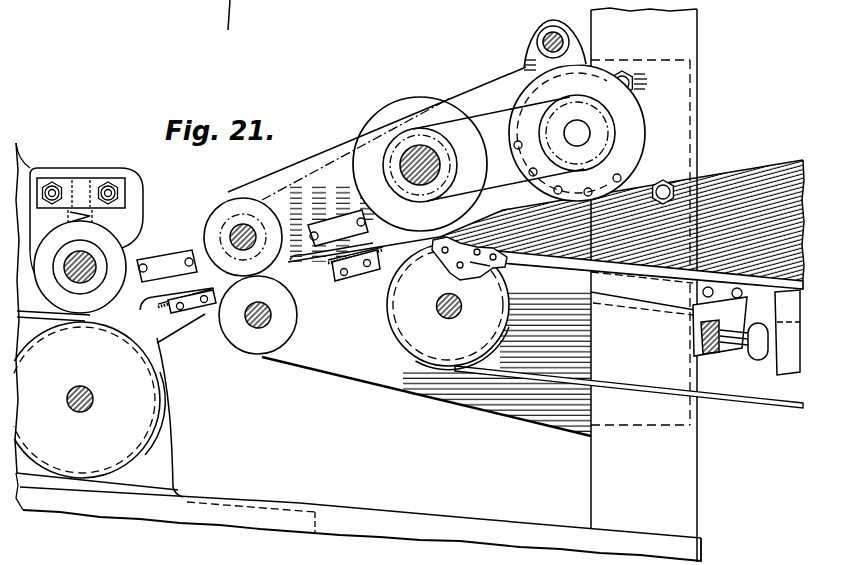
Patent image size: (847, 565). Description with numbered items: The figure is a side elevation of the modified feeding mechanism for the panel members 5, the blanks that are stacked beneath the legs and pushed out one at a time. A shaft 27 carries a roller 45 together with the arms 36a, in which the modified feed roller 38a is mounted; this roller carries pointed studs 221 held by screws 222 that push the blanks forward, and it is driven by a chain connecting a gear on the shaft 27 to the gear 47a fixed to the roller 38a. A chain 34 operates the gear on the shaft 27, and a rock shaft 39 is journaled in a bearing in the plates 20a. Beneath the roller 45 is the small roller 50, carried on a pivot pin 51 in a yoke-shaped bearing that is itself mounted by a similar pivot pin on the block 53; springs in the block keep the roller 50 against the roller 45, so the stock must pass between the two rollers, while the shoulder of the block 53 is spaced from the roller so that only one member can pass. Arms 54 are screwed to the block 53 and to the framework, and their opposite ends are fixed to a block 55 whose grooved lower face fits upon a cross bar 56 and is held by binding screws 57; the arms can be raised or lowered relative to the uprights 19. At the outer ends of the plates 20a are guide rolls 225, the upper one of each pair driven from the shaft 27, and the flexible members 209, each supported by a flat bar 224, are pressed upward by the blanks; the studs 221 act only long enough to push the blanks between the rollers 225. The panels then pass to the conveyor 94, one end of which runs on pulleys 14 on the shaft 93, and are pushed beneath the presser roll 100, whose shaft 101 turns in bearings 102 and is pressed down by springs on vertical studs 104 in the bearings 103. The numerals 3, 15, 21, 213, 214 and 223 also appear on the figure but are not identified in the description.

The stop plate 3 is at (800, 347).
The panel member 5 is at (768, 167).
The pulley 14 is at (123, 443).
The bar 15 is at (793, 406).
The upright 19 is at (700, 25).
The upper and lower plates 20a is at (187, 473).
The side plate 21 is at (430, 342).
The shaft 27 is at (407, 157).
The chain 34 is at (230, 3).
The arm 36a is at (487, 120).
The roller 38a is at (627, 115).
The rock shaft 39 is at (556, 32).
The roller 45 is at (403, 100).
The gear 47a is at (568, 100).
The small roller 50 is at (440, 257).
The pivot pin 51 is at (437, 282).
The block 53 is at (474, 278).
The arm 54 is at (563, 268).
The block 55 is at (727, 353).
The cross bar 56 is at (712, 355).
The binding screw 57 is at (757, 361).
The shaft 93 is at (82, 412).
The conveyor 94 is at (17, 480).
The presser roll 100 is at (22, 205).
The shaft 101 is at (105, 225).
The bearing 102 is at (97, 263).
The bearing 103 is at (67, 180).
The vertical stud 104 is at (80, 210).
The flexible member 209 is at (185, 300).
The member 213 is at (314, 562).
The member 214 is at (370, 562).
The pointed stud 221 is at (630, 182).
The screw 222 is at (620, 183).
The bracket 223 is at (163, 260).
The flat bar 224 is at (195, 313).
The guide roll 225 is at (230, 210).